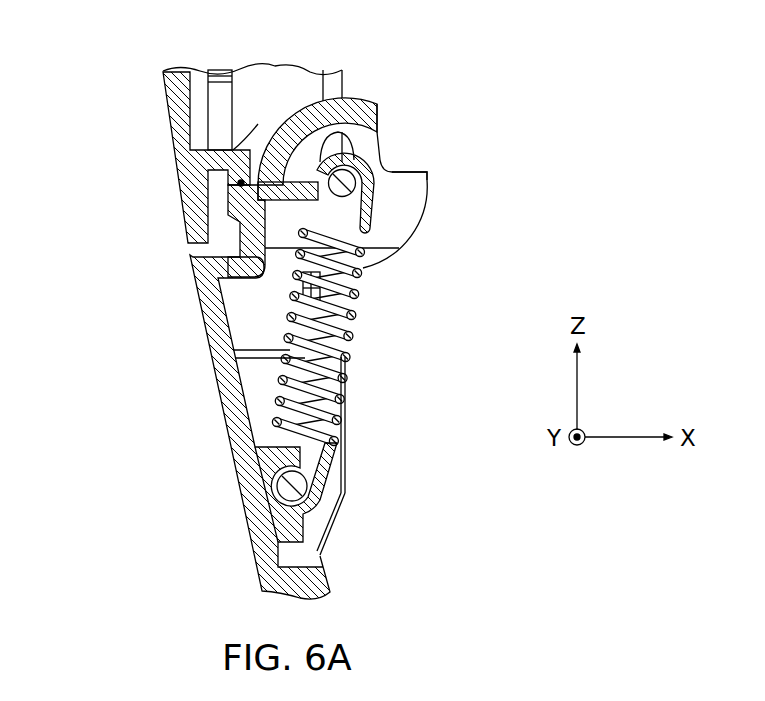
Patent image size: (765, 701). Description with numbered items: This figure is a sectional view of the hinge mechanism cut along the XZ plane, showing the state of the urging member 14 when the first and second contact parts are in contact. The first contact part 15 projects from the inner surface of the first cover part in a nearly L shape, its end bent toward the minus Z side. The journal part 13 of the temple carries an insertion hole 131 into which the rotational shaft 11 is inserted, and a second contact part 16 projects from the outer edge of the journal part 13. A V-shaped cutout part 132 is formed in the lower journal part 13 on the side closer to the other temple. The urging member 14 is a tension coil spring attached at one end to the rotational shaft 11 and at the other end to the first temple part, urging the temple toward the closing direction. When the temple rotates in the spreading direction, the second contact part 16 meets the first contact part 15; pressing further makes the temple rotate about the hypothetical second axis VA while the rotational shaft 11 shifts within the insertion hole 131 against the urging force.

The first contact part 15 is at (235, 142).
The insertion hole 131 is at (333, 137).
The rotational shaft 11 is at (347, 177).
The V-shaped cutout part 132 is at (417, 163).
The journal part 13 is at (388, 148).
The second axis VA is at (238, 183).
The second contact part 16 is at (232, 200).
The urging member 14 is at (348, 338).